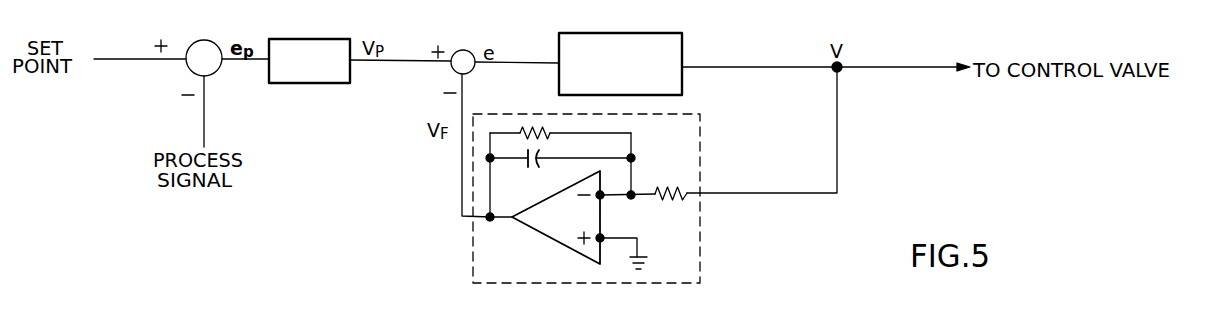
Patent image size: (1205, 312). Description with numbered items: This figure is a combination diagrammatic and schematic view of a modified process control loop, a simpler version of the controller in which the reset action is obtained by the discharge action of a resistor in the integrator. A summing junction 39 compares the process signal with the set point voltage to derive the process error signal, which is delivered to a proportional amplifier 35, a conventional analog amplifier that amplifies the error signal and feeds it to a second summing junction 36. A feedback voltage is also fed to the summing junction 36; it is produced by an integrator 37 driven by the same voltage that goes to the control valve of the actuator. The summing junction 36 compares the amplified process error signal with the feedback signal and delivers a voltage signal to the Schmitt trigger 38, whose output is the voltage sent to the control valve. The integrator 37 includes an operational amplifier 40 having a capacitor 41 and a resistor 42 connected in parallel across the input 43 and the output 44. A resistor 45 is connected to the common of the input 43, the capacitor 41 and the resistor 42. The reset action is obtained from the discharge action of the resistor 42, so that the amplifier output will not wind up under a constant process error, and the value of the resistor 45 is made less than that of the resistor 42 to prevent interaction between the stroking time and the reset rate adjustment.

The proportional amplifier 35 is at (287, 75).
The summing junction 36 is at (452, 70).
The integrator 37 is at (701, 150).
The Schmitt trigger 38 is at (685, 40).
The summing junction 39 is at (192, 74).
The operational amplifier 40 is at (562, 235).
The capacitor 41 is at (520, 152).
The resistor 42 is at (542, 132).
The input 43 is at (602, 197).
The output 44 is at (512, 219).
The resistor 45 is at (678, 198).